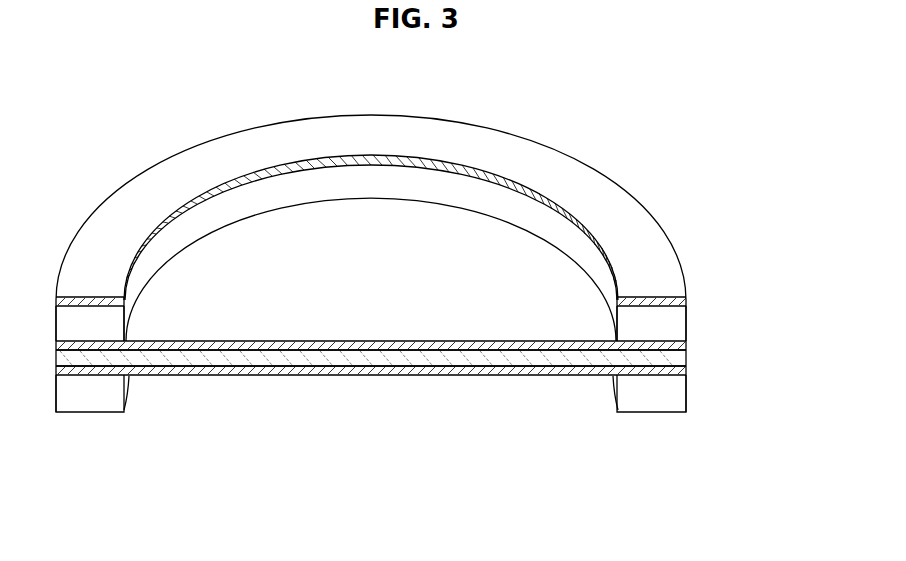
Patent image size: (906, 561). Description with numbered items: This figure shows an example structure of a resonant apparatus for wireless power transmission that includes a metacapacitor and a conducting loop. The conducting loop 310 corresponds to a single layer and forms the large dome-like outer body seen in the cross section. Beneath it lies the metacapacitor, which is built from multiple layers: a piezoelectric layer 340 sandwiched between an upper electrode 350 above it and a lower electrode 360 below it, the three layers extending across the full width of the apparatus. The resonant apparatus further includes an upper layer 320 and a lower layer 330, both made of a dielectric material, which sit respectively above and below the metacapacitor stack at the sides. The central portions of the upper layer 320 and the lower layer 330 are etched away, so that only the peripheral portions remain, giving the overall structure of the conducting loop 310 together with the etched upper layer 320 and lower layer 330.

The conducting loop 310 is at (542, 166).
The upper layer 320 is at (680, 322).
The lower layer 330 is at (679, 395).
The piezoelectric layer 340 is at (678, 358).
The upper electrode 350 is at (289, 345).
The lower electrode 360 is at (470, 370).